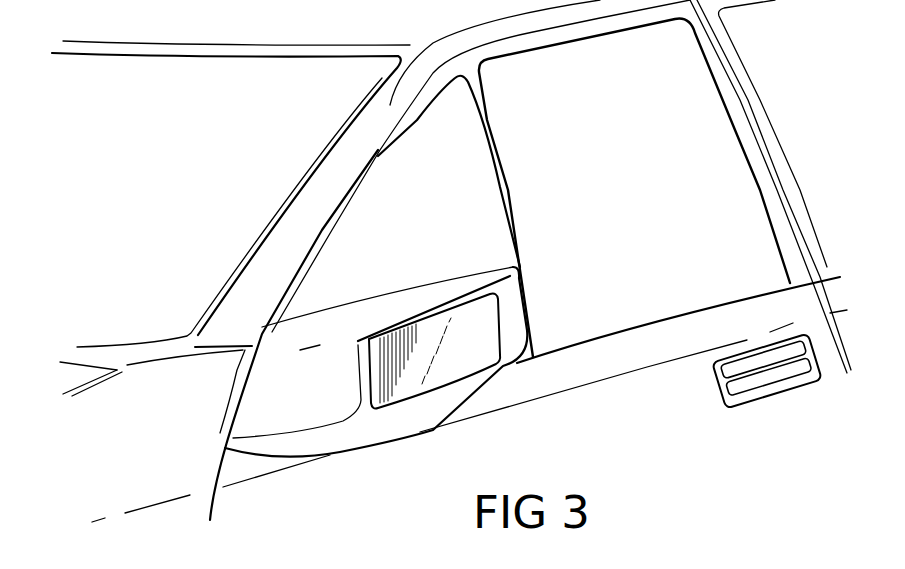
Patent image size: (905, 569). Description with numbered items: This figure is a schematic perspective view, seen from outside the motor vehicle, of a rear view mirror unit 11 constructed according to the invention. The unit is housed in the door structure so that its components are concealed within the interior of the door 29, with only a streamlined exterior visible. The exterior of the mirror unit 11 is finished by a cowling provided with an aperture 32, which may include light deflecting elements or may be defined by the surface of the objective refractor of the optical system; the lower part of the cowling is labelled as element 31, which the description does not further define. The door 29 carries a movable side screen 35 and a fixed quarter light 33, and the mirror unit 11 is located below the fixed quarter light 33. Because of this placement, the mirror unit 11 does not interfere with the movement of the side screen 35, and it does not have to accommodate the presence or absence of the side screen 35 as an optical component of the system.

The mirror unit 11 is at (303, 308).
The door 29 is at (618, 405).
The mirror base 31 is at (368, 425).
The aperture 32 is at (463, 323).
The fixed quarter light 33 is at (410, 167).
The movable side screen 35 is at (595, 163).